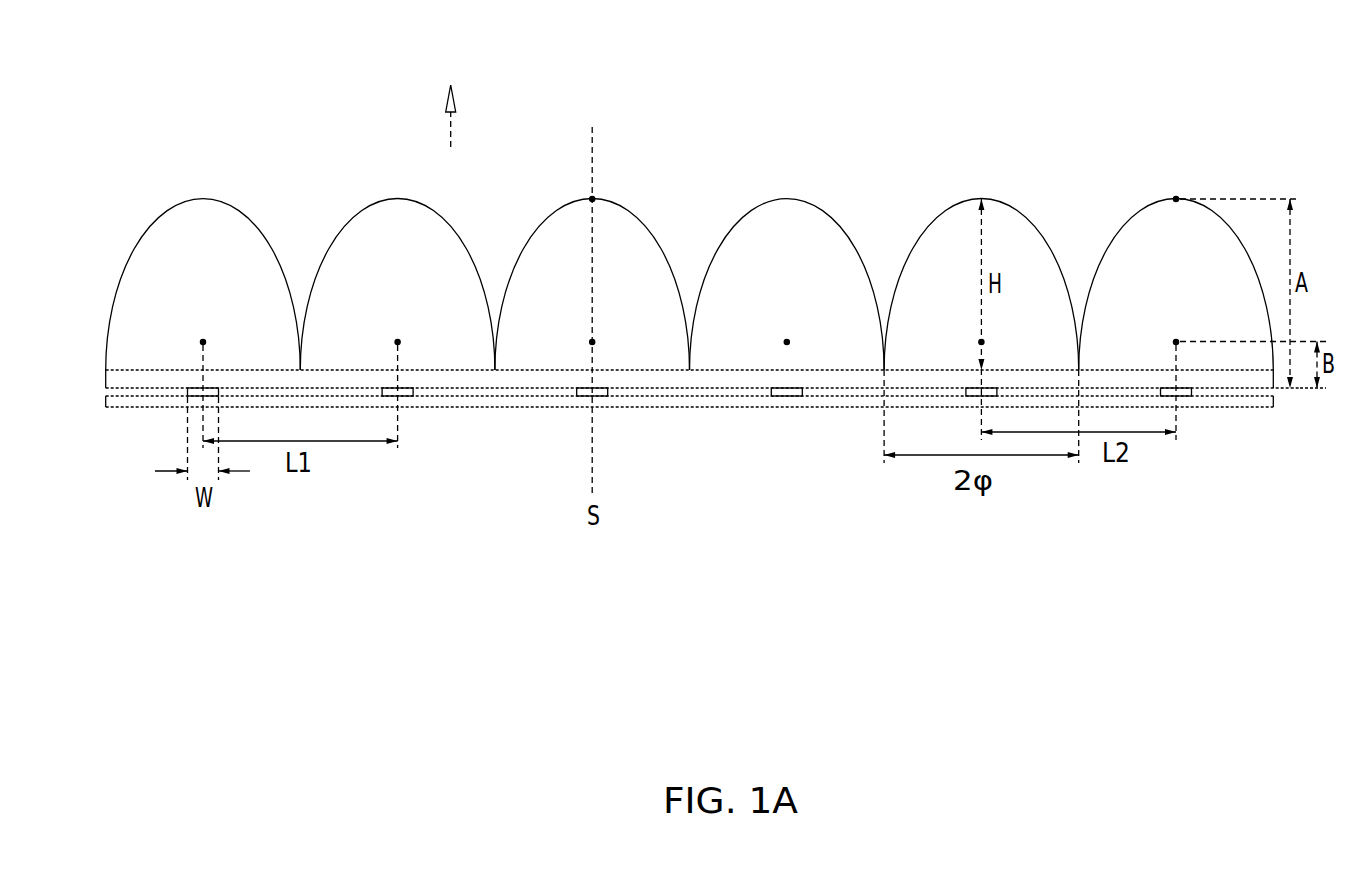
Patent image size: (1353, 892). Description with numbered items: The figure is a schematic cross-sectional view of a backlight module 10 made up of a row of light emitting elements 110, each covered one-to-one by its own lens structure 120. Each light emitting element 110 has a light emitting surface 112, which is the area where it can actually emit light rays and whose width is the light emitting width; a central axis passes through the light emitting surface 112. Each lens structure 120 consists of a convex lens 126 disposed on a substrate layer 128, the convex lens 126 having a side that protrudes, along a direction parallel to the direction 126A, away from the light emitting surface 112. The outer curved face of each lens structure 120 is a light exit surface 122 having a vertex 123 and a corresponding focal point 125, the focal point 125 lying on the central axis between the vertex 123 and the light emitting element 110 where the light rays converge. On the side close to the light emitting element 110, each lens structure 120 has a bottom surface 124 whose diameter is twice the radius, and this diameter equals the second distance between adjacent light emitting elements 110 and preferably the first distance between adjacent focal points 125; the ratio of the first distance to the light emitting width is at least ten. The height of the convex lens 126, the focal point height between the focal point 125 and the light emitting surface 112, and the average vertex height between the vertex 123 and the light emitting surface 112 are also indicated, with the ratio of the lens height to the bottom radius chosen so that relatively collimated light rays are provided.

The backlight module 10 is at (160, 108).
The light emitting element 110 is at (195, 393).
The light emitting surface 112 is at (793, 386).
The lens structure 120 is at (670, 238).
The light exit surface 122 is at (632, 210).
The vertex 123 is at (592, 199).
The bottom surface 124 is at (746, 370).
The focal point 125 is at (203, 340).
The convex lens 126 is at (545, 258).
The direction 126A is at (450, 101).
The substrate layer 128 is at (915, 382).